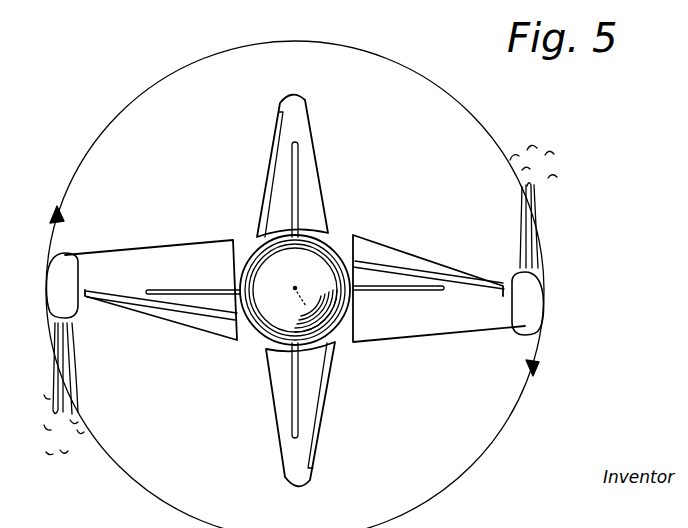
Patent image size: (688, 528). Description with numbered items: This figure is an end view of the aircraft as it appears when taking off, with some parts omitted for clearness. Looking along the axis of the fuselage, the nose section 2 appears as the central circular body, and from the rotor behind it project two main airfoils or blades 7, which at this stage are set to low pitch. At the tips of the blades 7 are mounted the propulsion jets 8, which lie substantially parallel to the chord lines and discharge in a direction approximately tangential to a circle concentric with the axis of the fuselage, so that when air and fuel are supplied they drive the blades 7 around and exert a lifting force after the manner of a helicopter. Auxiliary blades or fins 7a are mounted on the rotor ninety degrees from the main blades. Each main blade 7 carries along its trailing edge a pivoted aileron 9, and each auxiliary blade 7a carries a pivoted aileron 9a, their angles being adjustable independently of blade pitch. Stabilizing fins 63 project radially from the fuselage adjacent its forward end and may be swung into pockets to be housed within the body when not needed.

The nose section 2 is at (273, 343).
The main airfoils or blades 7 is at (162, 252).
The auxiliary blades or fins 7a is at (320, 213).
The propulsion jets 8 is at (58, 262).
The aileron 9 is at (160, 317).
The aileron 9a is at (268, 207).
The stabilizing fins 63 is at (295, 175).